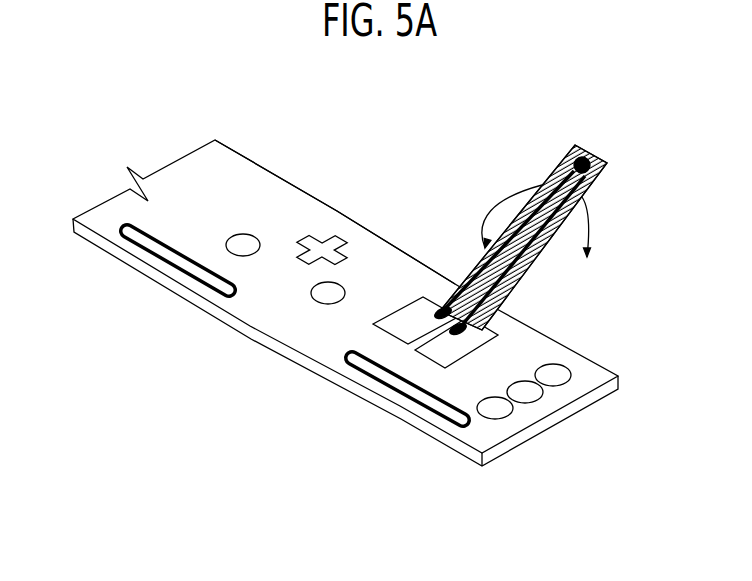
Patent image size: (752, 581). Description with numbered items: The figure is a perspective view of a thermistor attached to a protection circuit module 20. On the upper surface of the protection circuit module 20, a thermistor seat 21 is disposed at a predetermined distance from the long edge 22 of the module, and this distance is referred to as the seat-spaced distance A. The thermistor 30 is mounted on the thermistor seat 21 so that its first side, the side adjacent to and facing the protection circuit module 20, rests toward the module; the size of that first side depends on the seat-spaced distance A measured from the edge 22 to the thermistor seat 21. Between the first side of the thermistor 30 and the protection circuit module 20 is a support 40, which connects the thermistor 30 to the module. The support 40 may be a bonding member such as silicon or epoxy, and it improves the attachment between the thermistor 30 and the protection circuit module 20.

The protection circuit module 20 is at (231, 332).
The thermistor seat 21 is at (442, 352).
The long edge 22 is at (337, 212).
The thermistor 30 is at (590, 200).
The support 40 is at (492, 305).
The seat-spaced distance A is at (428, 293).